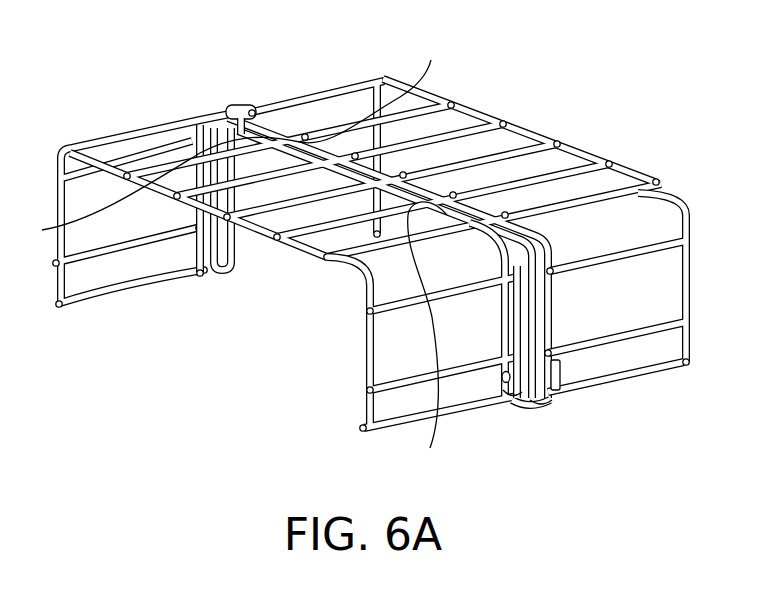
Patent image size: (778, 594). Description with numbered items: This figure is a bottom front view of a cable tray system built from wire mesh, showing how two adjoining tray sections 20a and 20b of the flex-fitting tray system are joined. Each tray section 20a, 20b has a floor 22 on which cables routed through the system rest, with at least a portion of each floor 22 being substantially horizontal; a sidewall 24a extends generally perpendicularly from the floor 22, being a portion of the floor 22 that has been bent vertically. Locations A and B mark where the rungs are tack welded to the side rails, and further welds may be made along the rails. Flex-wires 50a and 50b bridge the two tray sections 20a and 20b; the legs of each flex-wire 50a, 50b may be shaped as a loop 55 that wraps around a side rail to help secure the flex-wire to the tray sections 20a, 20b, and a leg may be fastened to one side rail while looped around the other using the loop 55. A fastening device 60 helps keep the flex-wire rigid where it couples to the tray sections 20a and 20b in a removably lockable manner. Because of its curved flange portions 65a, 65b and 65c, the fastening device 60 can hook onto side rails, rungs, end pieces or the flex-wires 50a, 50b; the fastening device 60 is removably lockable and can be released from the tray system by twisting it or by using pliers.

The tray section 20a is at (62, 128).
The tray section 20b is at (238, 102).
The floor 22 is at (537, 168).
The sidewall 24a is at (357, 283).
The flex-wire 50a is at (229, 112).
The flex-wire 50b is at (537, 403).
The loop 55 is at (226, 268).
The fastening device 60 is at (507, 385).
The curved flange portion 65a is at (490, 397).
The curved flange portion 65b is at (557, 378).
The curved flange portion 65c is at (545, 398).
The weld location A is at (290, 137).
The weld location B is at (429, 45).